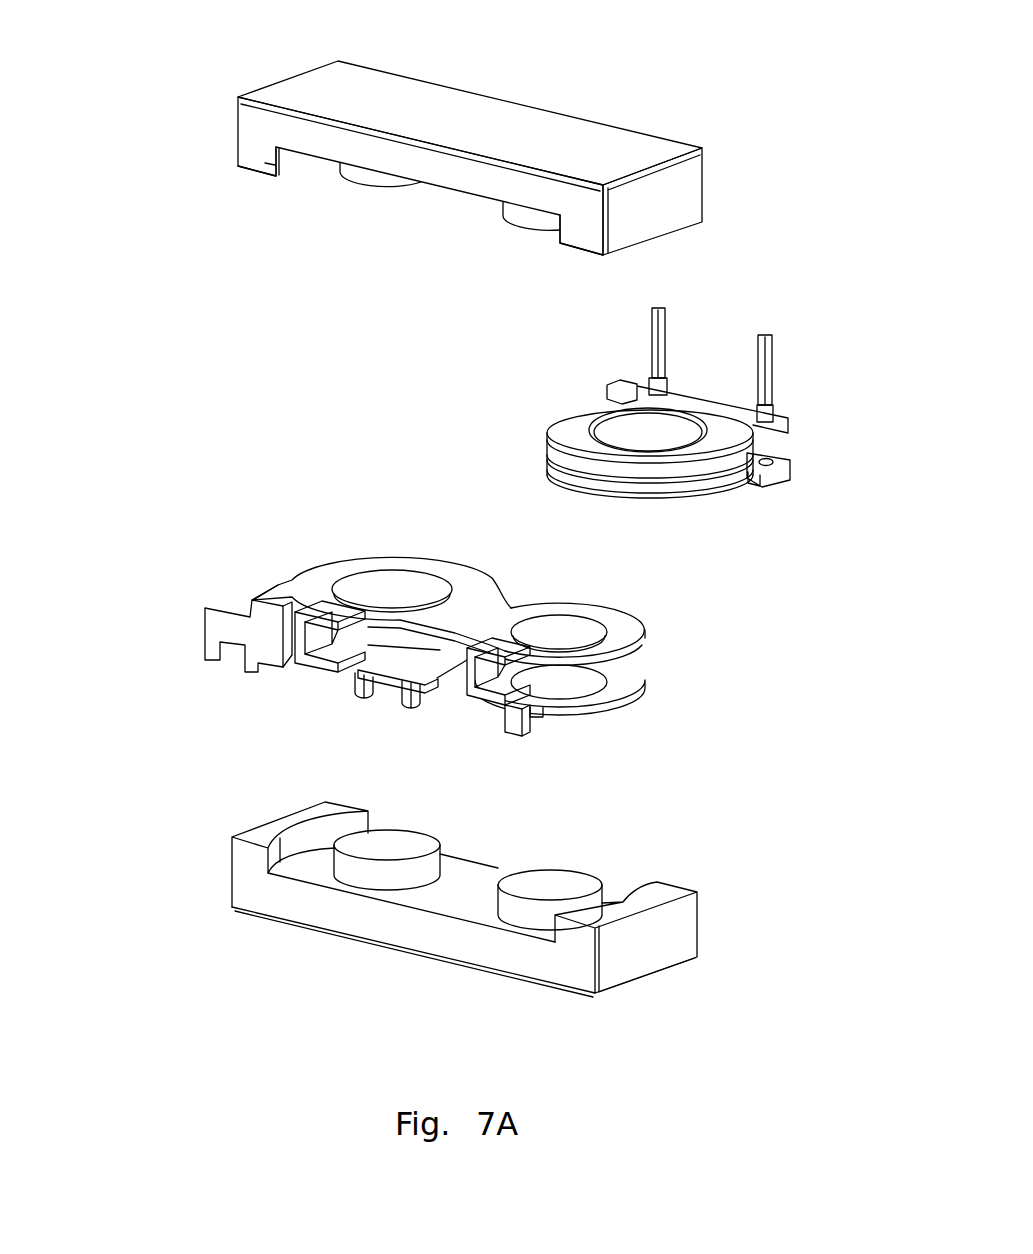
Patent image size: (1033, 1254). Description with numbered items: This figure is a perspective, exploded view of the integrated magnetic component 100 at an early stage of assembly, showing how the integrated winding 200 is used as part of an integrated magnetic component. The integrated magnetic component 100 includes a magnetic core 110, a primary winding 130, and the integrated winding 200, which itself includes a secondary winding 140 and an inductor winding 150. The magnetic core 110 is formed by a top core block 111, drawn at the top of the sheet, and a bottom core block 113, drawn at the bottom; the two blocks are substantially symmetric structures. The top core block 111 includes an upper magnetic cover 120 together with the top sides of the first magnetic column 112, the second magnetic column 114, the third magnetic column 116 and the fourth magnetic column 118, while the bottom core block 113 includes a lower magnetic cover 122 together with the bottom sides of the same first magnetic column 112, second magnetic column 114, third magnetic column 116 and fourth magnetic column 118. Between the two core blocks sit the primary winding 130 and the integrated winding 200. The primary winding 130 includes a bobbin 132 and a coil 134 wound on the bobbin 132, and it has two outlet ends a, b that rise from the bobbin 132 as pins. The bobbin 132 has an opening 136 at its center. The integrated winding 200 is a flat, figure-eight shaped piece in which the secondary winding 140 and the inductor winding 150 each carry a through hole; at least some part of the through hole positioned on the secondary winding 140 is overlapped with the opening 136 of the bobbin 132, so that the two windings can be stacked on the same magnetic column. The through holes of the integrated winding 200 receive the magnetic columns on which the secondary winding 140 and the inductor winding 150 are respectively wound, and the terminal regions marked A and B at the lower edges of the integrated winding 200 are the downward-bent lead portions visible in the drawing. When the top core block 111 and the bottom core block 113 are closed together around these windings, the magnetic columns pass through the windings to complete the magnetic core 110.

The integrated magnetic component 100 is at (142, 41).
The magnetic core 110 is at (132, 122).
The top core block 111 is at (238, 105).
The first magnetic column 112 is at (287, 152).
The bottom core block 113 is at (232, 868).
The second magnetic column 114 is at (370, 180).
The third magnetic column 116 is at (525, 215).
The fourth magnetic column 118 is at (590, 212).
The upper magnetic cover 120 is at (508, 118).
The lower magnetic cover 122 is at (437, 935).
The primary winding 130 is at (727, 558).
The bobbin 132 is at (715, 490).
The coil 134 is at (653, 480).
The opening 136 is at (588, 478).
The secondary winding 140 is at (383, 567).
The inductor winding 150 is at (548, 605).
The integrated winding 200 is at (303, 555).
The outlet end a is at (658, 338).
The outlet end b is at (766, 364).
The first terminal A is at (251, 672).
The second terminal B is at (411, 708).